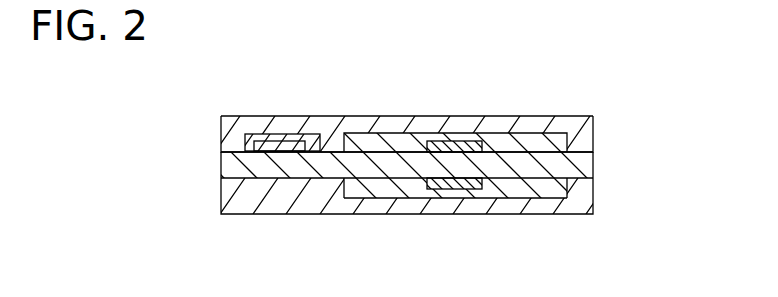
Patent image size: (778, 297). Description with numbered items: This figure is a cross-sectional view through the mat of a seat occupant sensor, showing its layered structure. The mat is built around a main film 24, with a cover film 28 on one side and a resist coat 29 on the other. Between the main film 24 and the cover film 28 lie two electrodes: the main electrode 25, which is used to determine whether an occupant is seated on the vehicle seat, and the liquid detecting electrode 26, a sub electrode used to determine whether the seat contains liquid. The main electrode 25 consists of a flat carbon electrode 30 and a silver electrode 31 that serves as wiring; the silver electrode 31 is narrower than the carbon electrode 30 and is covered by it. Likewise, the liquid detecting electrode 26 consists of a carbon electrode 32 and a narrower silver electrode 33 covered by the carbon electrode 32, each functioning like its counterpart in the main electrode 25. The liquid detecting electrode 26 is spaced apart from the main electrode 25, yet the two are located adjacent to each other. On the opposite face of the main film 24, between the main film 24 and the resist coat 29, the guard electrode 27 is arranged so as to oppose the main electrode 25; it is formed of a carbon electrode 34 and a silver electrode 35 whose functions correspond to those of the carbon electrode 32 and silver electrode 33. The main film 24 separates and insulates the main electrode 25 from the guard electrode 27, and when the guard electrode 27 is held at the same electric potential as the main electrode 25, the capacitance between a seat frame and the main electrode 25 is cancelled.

The main film 24 is at (584, 165).
The main electrode 25 is at (524, 127).
The liquid detecting electrode 26 is at (250, 131).
The guard electrode 27 is at (545, 198).
The cover film 28 is at (585, 129).
The resist coat 29 is at (585, 201).
The carbon electrode 30 is at (382, 138).
The silver electrode 31 is at (450, 143).
The carbon electrode 32 is at (315, 138).
The silver electrode 33 is at (272, 142).
The carbon electrode 34 is at (372, 190).
The silver electrode 35 is at (472, 190).